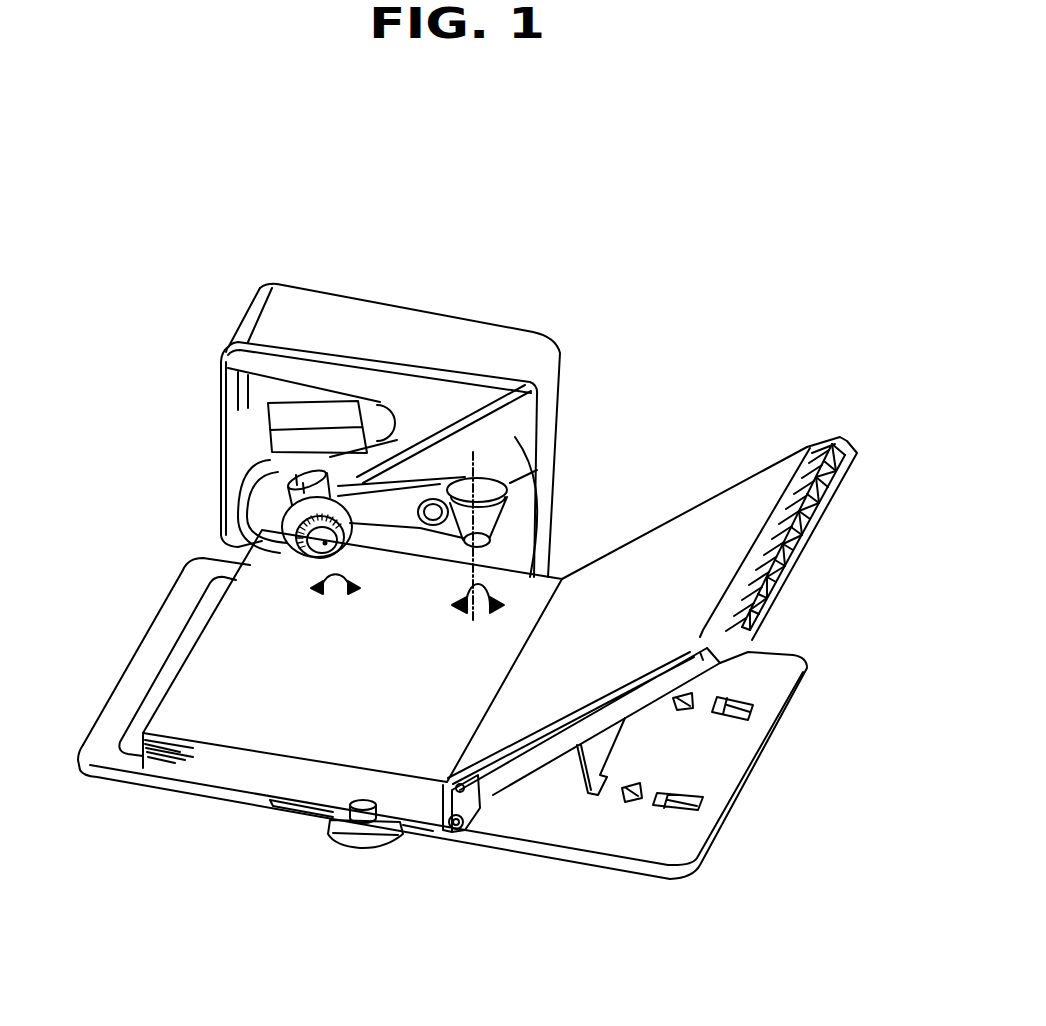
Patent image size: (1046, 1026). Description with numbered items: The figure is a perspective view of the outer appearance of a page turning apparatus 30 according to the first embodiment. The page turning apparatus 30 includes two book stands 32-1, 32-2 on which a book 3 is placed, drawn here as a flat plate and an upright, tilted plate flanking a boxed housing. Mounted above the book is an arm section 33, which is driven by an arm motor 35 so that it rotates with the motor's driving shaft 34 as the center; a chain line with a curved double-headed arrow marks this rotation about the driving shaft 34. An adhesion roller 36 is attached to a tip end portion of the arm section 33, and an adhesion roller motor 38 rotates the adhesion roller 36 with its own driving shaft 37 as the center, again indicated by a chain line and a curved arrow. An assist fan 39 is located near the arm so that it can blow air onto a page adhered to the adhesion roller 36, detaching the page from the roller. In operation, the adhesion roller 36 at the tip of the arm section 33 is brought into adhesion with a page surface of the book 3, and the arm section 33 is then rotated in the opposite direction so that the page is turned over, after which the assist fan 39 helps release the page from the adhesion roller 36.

The page turning apparatus 30 is at (553, 250).
The book 3 is at (518, 610).
The book stand 32-1 is at (170, 627).
The book stand 32-2 is at (832, 437).
The arm section 33 is at (383, 505).
The driving shaft 34 is at (474, 615).
The arm motor 35 is at (487, 497).
The adhesion roller 36 is at (287, 492).
The driving shaft 37 is at (318, 535).
The adhesion roller motor 38 is at (270, 460).
The assist fan 39 is at (300, 405).